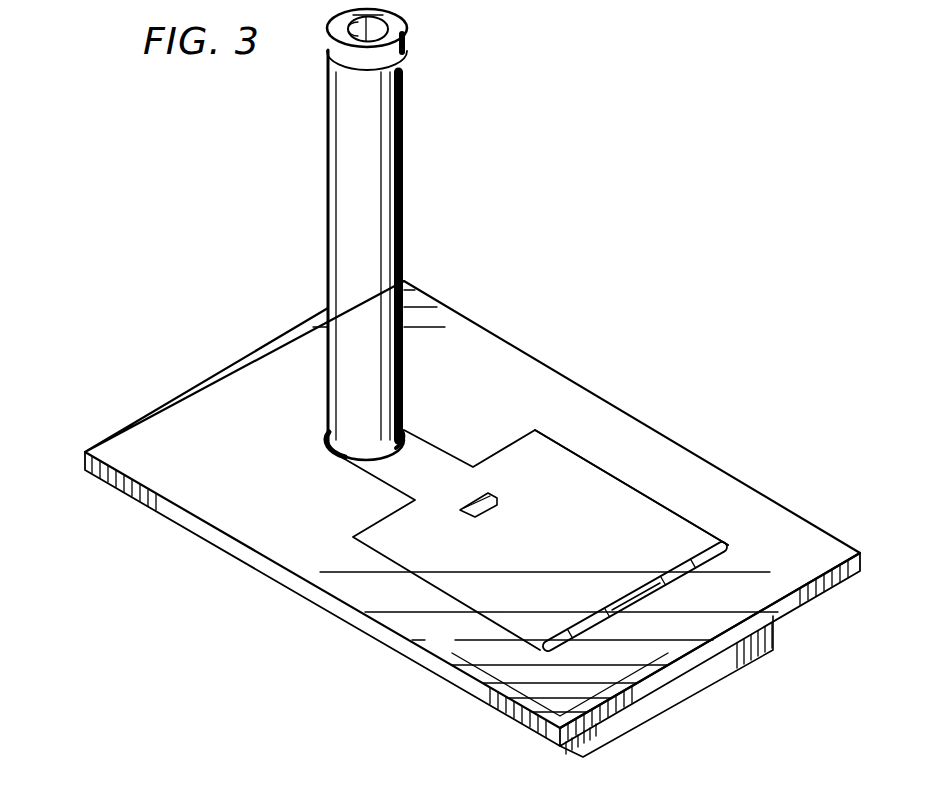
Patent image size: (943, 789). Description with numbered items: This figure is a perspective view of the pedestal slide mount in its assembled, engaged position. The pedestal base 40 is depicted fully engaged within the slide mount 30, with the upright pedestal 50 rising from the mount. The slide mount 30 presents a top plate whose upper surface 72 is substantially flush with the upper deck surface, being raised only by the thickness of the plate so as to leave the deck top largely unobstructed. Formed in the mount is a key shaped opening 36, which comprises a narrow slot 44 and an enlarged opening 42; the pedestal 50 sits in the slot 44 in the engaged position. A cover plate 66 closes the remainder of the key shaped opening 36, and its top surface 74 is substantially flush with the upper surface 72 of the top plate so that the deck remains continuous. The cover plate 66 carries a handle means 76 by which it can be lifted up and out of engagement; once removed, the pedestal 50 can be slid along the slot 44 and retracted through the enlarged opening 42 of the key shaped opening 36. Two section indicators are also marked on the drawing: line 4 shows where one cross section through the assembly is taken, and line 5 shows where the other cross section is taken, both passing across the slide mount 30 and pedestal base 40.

The slide mount 30 is at (122, 416).
The pedestal base 40 is at (307, 206).
The pedestal 50 is at (405, 181).
The slot 44 is at (360, 468).
The key shaped opening 36 is at (353, 537).
The enlarged opening 42 is at (469, 614).
The cover plate 66 is at (565, 567).
The top surface of cover plate 74 is at (625, 492).
The upper surface of top plate 72 is at (698, 462).
The handle means 76 is at (478, 517).
The section line 4- 4 is at (533, 285).
The section line 5- 5 is at (228, 308).